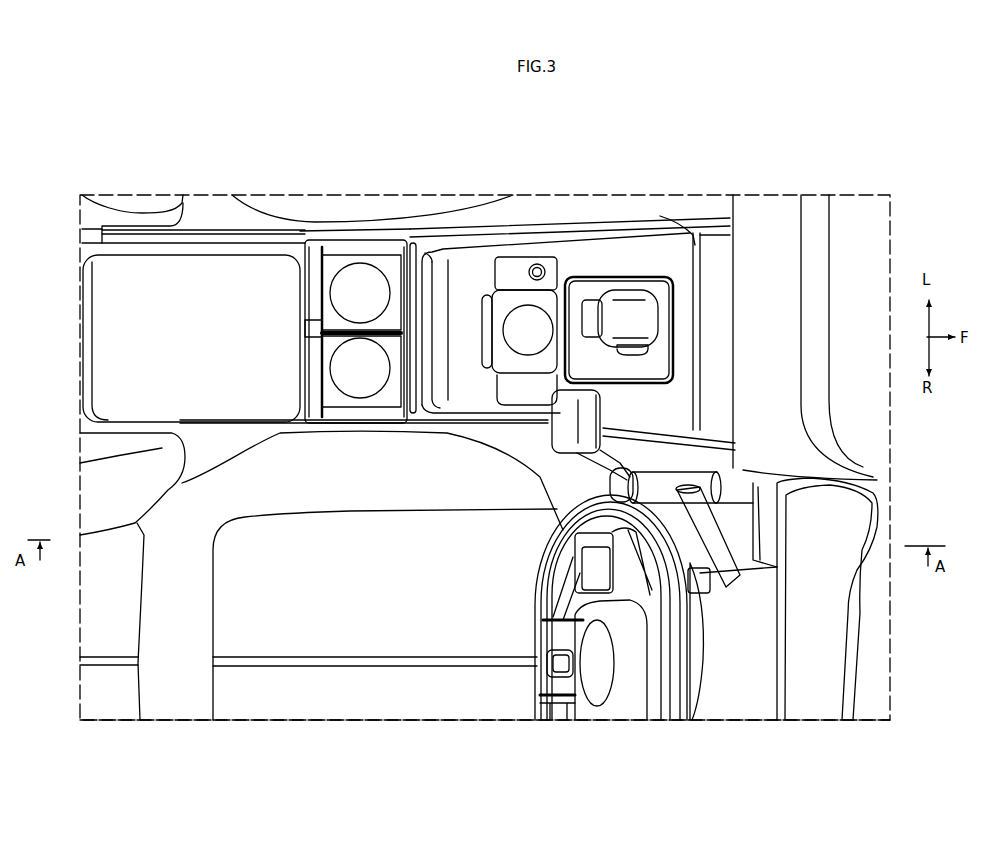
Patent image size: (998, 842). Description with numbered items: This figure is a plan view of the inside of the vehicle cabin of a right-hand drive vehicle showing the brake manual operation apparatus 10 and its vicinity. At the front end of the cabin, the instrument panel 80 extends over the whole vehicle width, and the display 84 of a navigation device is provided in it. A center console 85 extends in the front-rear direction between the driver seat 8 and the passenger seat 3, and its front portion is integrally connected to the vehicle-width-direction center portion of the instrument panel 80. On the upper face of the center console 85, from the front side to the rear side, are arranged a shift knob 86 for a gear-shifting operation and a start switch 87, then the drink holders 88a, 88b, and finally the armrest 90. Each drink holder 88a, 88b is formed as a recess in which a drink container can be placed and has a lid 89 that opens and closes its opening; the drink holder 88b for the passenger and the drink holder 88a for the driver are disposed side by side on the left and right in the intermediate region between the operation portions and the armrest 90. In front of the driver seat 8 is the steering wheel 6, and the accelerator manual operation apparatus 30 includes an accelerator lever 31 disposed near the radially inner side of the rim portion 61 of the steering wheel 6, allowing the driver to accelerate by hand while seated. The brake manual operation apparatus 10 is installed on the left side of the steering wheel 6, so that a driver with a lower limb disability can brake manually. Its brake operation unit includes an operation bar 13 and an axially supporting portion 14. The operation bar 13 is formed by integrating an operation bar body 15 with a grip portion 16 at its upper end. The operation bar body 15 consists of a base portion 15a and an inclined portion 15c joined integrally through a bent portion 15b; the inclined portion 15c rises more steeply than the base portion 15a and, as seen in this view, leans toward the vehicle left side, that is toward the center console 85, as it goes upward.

The passenger seat 3 is at (145, 234).
The steering wheel 6 is at (703, 693).
The driver seat 8 is at (110, 426).
The brake manual operation apparatus 10 is at (633, 463).
The operation bar 13 is at (660, 467).
The axially supporting portion 14 is at (738, 486).
The operation bar body 15 is at (677, 470).
The base portion 15a is at (737, 482).
The bent portion 15b is at (606, 482).
The inclined portion 15c is at (585, 455).
The grip portion 16 is at (601, 407).
The accelerator manual operation apparatus 30 is at (586, 607).
The accelerator lever 31 is at (557, 560).
The rim portion 61 is at (701, 637).
The instrument panel 80 is at (728, 210).
The display 84 is at (693, 245).
The center console 85 is at (538, 217).
The shift knob 86 is at (638, 282).
The start switch 87 is at (545, 313).
The drink holder 88a is at (350, 390).
The drink holder 88b is at (367, 267).
The lid 89 is at (333, 250).
The armrest 90 is at (205, 230).